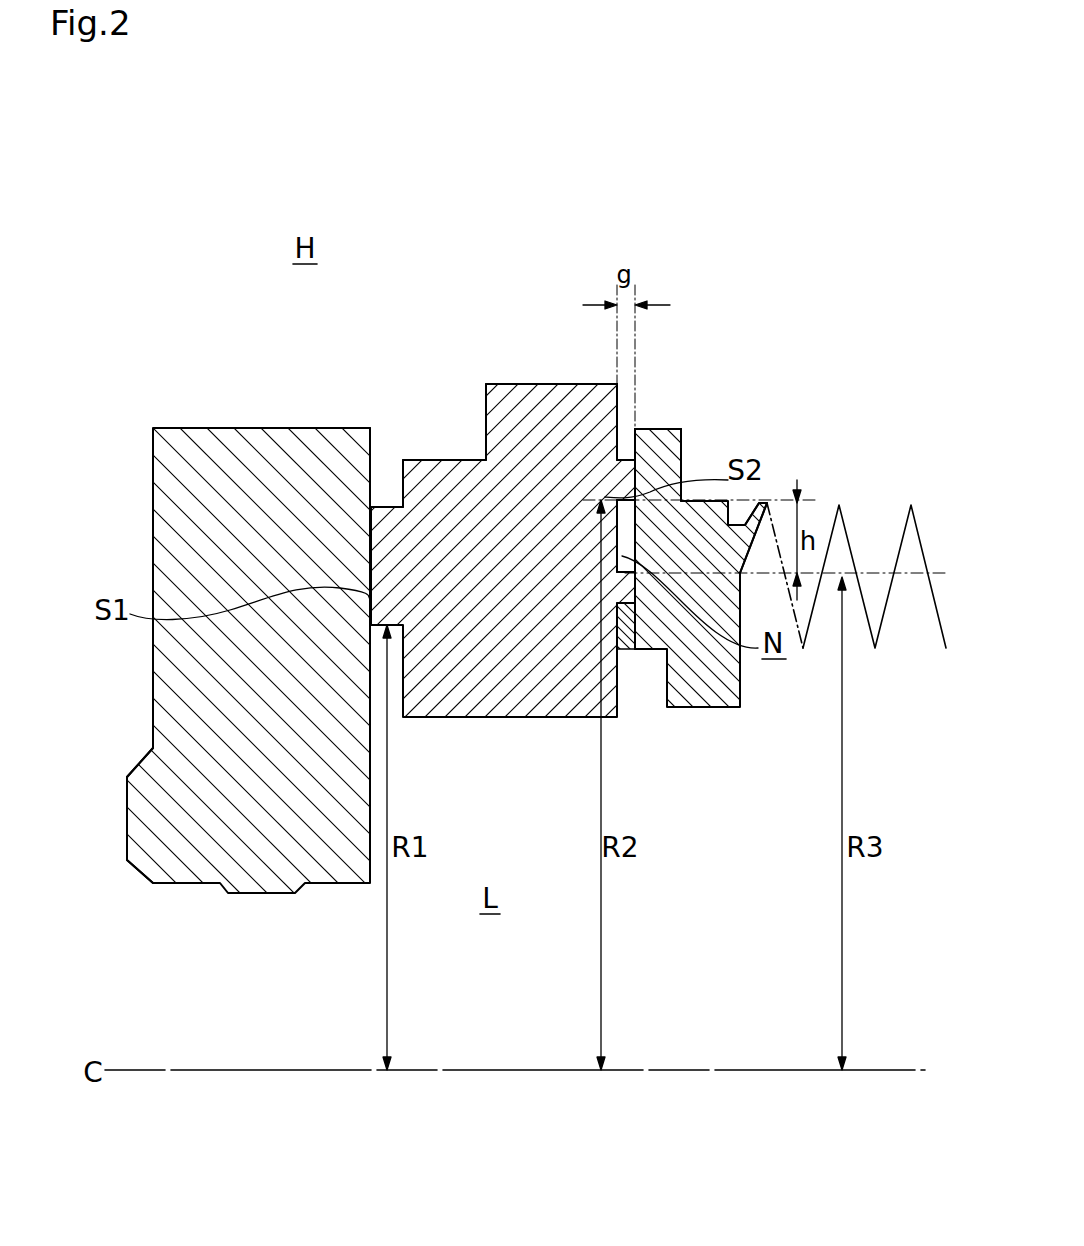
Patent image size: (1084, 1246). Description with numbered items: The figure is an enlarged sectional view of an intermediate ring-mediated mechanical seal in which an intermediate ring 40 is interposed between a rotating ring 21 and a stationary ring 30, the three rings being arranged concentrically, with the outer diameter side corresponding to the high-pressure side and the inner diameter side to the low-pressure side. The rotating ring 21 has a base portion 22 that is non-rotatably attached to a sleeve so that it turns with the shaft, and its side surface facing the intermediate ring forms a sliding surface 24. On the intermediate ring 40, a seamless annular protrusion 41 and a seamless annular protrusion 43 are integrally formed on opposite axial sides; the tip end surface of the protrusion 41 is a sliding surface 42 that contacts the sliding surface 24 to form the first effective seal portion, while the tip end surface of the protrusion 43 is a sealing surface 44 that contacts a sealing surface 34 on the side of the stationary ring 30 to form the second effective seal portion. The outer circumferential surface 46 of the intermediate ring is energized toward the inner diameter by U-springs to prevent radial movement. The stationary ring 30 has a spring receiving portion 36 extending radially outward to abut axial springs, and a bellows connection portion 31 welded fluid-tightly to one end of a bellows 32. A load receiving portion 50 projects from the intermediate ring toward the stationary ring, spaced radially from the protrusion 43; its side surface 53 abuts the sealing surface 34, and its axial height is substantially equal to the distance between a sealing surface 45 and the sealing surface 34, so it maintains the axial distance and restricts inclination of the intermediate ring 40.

The rotating ring 21 is at (251, 420).
The base portion 22 is at (135, 822).
The sliding surface 24 is at (372, 443).
The stationary ring 30 is at (712, 328).
The bellows connection portion 31 is at (766, 502).
The bellows 32 is at (846, 524).
The sealing surface 34 is at (607, 495).
The spring receiving portion 36 is at (664, 432).
The intermediate ring 40 is at (452, 336).
The annular protrusion 41 is at (405, 461).
The sliding surface 42 is at (363, 512).
The annular protrusion 43 is at (627, 470).
The sealing surface 44 is at (645, 492).
The sealing surface 45 is at (623, 403).
The outer circumferential surface 46 is at (541, 384).
The load receiving portion 50 is at (628, 600).
The side surface 53 is at (637, 592).